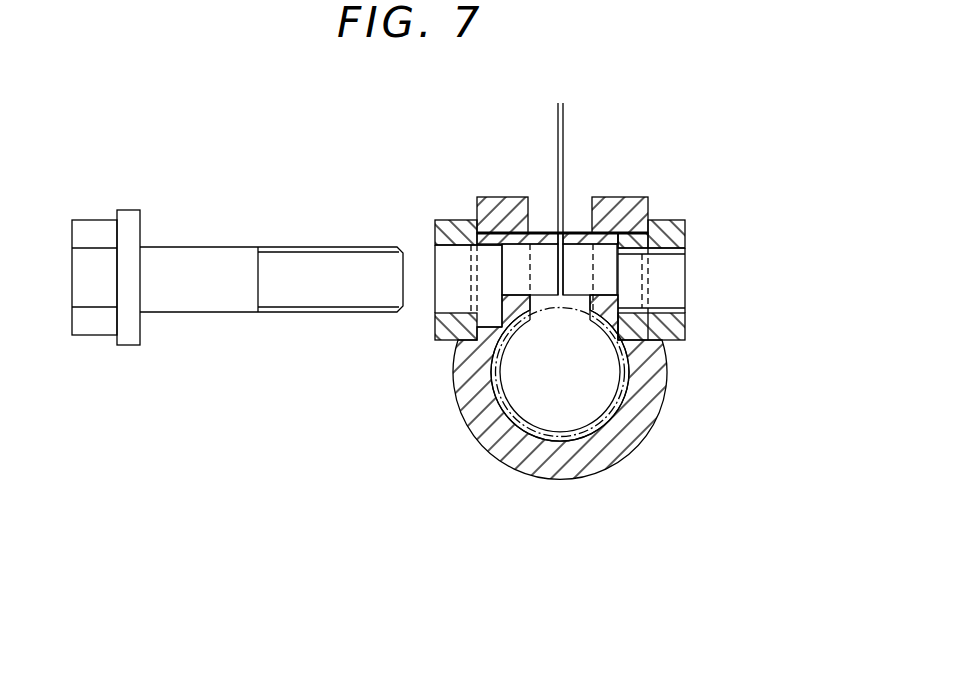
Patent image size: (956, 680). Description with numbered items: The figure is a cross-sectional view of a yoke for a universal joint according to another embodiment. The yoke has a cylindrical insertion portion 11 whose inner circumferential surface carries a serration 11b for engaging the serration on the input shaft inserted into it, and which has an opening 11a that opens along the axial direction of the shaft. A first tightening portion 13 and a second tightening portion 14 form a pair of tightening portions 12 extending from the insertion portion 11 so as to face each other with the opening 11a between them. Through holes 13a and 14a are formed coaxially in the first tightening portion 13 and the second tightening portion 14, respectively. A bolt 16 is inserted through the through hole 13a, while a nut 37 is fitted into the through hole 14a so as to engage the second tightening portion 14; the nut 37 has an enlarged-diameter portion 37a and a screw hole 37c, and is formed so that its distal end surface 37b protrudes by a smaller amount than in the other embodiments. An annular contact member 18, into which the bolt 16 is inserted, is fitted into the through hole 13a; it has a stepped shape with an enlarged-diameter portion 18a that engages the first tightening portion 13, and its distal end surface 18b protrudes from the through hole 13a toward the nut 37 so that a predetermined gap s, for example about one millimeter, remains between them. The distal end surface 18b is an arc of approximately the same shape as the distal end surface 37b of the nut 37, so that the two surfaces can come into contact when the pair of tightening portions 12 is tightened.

The insertion portion 11 is at (581, 300).
The opening 11a is at (557, 273).
The serration 11b is at (508, 400).
The pair of tightening portions 12 is at (553, 187).
The first tightening portion 13 is at (481, 197).
The through hole 13a is at (470, 248).
The second tightening portion 14 is at (620, 198).
The through hole 14a is at (620, 249).
The bolt 16 is at (93, 228).
The contact member 18 is at (463, 266).
The enlarged-diameter portion 18a is at (432, 335).
The distal end surface 18b is at (563, 257).
The nut 37 is at (669, 246).
The enlarged-diameter portion 37a is at (680, 220).
The distal end surface 37b is at (542, 298).
The screw hole 37c is at (654, 308).
The gap s is at (590, 115).